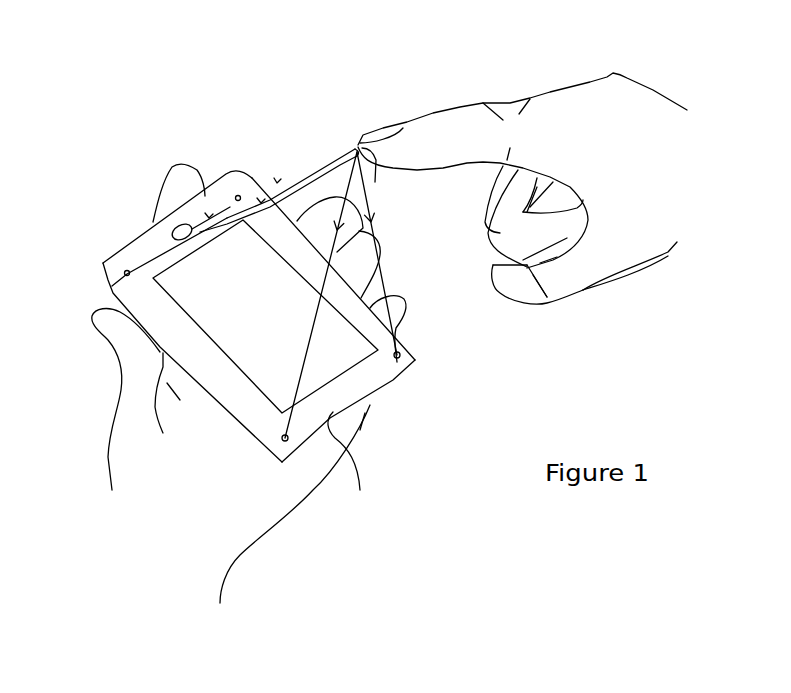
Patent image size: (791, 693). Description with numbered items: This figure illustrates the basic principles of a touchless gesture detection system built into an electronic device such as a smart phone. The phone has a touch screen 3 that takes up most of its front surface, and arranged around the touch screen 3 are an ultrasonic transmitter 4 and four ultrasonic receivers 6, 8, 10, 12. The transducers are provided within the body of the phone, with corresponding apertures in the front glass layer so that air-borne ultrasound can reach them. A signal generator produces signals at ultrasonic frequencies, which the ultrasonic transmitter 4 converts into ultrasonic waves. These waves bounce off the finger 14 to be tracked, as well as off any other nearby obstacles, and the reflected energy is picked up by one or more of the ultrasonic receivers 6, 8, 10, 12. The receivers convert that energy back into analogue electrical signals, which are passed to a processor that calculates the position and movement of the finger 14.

The touch screen 3 is at (397, 362).
The ultrasonic transmitter 4 is at (172, 230).
The ultrasonic receiver 6 is at (100, 282).
The ultrasonic receiver 8 is at (239, 196).
The ultrasonic receiver 10 is at (278, 460).
The ultrasonic receiver 12 is at (415, 359).
The finger 14 is at (354, 295).